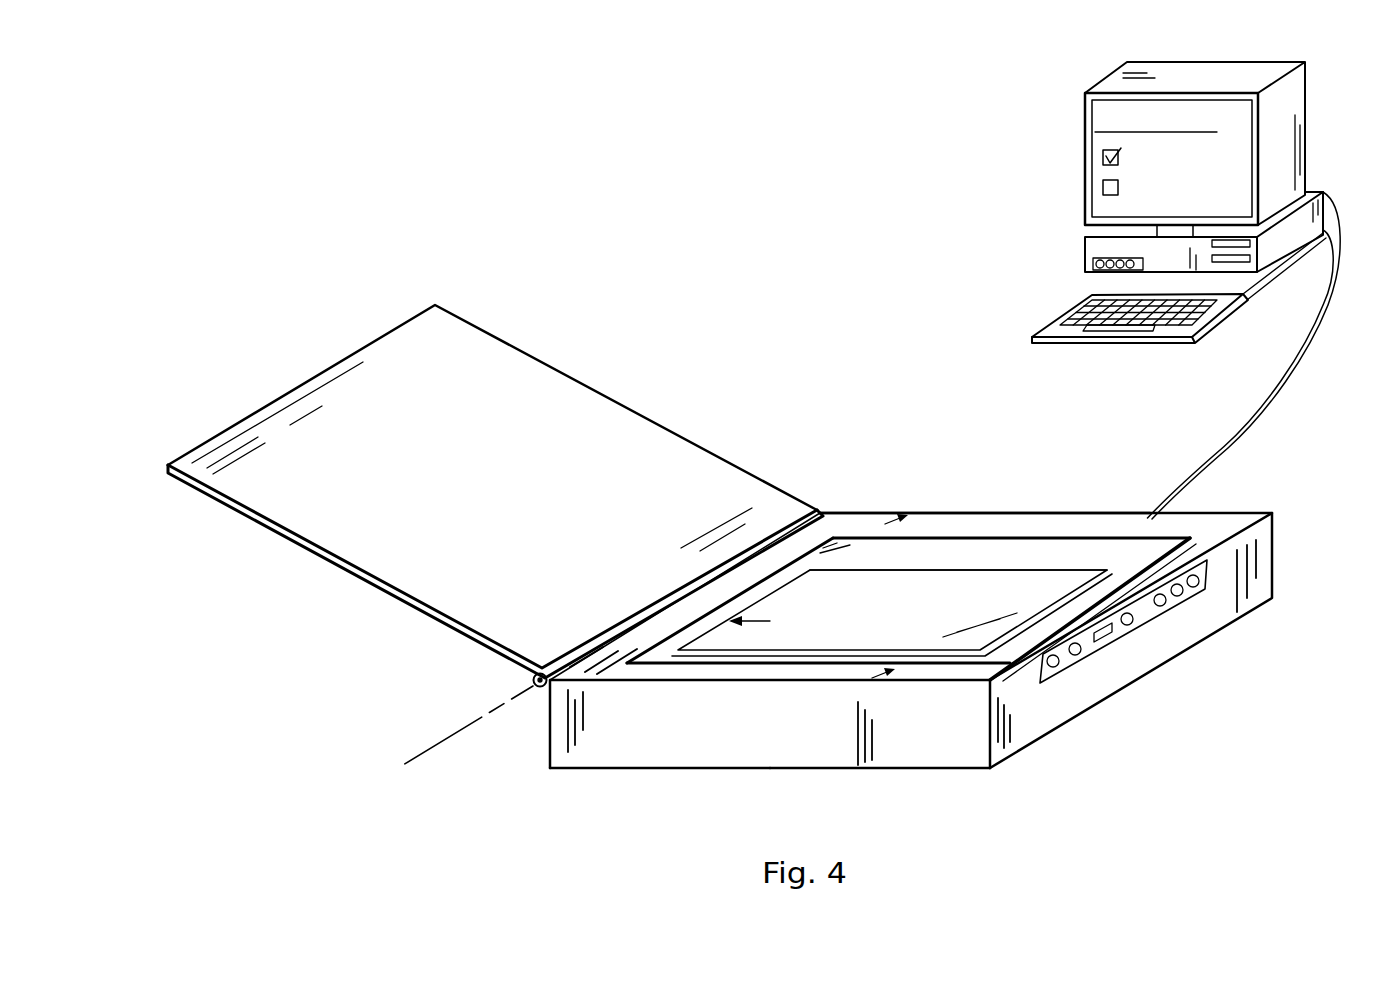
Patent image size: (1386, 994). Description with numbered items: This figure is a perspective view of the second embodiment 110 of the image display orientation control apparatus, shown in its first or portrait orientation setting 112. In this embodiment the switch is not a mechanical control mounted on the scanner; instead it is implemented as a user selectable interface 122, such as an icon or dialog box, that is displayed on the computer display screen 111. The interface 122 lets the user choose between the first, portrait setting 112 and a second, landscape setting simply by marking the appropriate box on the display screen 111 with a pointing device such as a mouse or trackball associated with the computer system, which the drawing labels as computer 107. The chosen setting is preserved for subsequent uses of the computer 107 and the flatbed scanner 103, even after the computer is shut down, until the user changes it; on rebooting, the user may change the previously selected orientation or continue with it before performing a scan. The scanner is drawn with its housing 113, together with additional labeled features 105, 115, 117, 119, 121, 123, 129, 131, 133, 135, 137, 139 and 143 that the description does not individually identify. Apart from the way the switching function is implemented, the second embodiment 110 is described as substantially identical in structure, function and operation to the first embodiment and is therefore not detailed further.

The scanner housing 103 is at (723, 772).
The scanning platen (glass) 105 is at (943, 622).
The host computer 107 is at (1078, 247).
The second embodiment of the image display orientation control apparatus 110 is at (264, 134).
The computer display screen 111 is at (1085, 113).
The first setting 112 is at (1103, 160).
The first side of scanner housing 113 is at (645, 772).
The rear edge of scanner housing 115 is at (845, 512).
The second side of scanner housing 117 is at (912, 770).
The rear edge of platen 119 is at (948, 555).
The control panel 121 is at (1118, 638).
The user selectable interface 122 is at (1090, 193).
The scanner lid 123 is at (427, 447).
The hinge 129 is at (533, 680).
The hinge axis 131 is at (443, 742).
The left bezel edge 133 is at (705, 614).
The right bezel edge 135 is at (1190, 540).
The front bezel edge 137 is at (795, 670).
The rear bezel edge 139 is at (1080, 492).
The scan direction arrow 143 is at (770, 621).